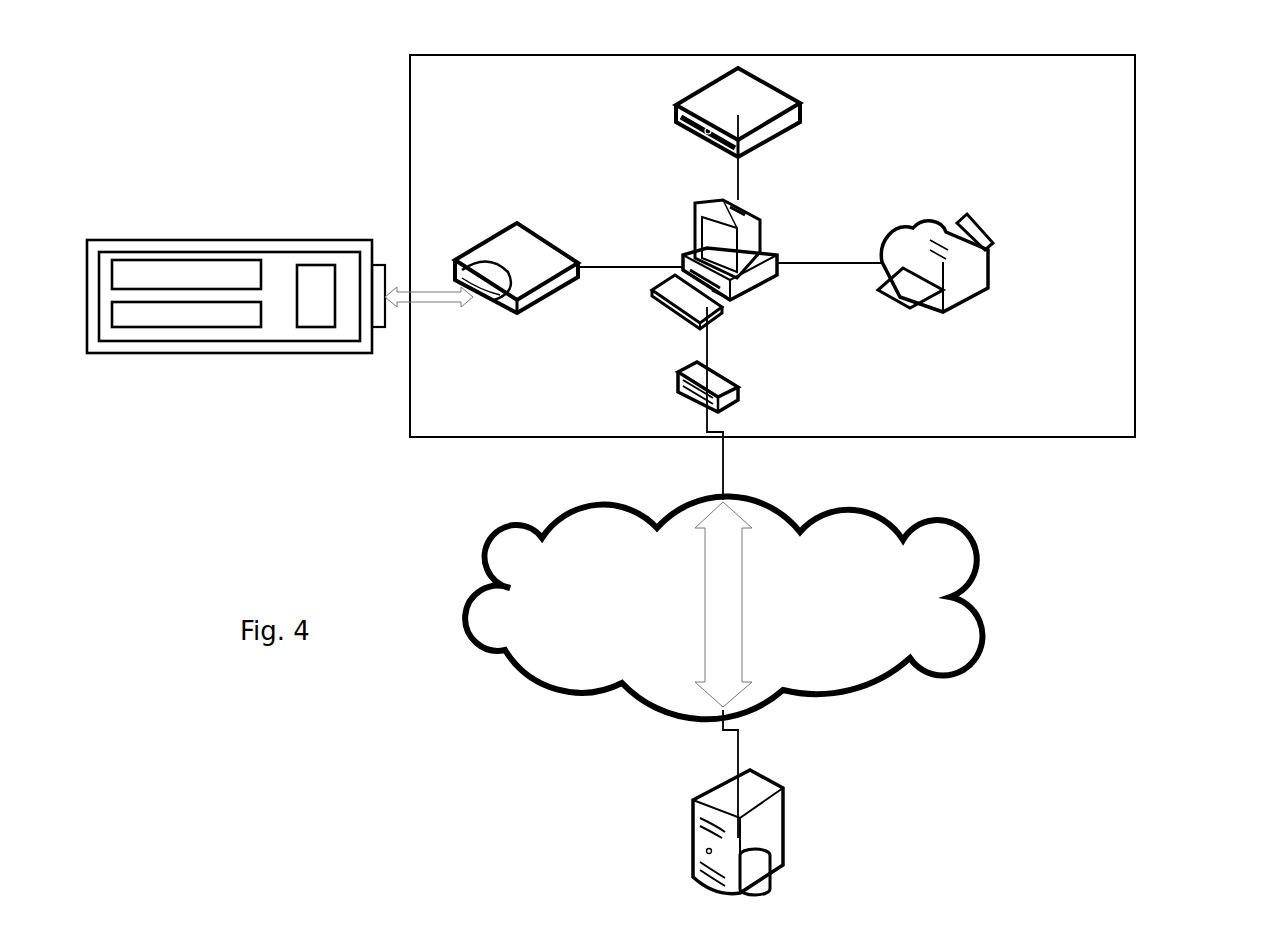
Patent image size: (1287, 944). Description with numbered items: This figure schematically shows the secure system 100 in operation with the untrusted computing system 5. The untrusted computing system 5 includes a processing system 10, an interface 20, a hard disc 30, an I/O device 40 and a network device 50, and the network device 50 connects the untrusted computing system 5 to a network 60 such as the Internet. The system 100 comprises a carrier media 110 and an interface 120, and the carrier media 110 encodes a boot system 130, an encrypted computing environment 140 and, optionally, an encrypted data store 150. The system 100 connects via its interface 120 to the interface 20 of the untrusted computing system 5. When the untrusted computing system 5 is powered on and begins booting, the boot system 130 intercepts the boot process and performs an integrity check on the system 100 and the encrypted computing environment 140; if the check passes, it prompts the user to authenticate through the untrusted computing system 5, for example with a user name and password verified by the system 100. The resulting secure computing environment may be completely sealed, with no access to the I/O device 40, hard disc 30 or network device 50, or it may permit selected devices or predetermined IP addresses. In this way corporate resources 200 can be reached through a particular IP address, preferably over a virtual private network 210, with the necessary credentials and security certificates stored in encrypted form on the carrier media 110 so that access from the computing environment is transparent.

The untrusted computing system 5 is at (1085, 148).
The processing system 10 is at (737, 297).
The interface 20 is at (517, 268).
The hard disc 30 is at (800, 115).
The I/O device 40 is at (958, 272).
The network device 50 is at (728, 392).
The network 60 is at (862, 611).
The system 100 is at (285, 238).
The carrier media 110 is at (273, 314).
The interface 120 is at (397, 168).
The boot system 130 is at (319, 278).
The encrypted computing environment 140 is at (175, 277).
The encrypted data store 150 is at (203, 323).
The corporate resources 200 is at (770, 848).
The virtual private network 210 is at (742, 630).